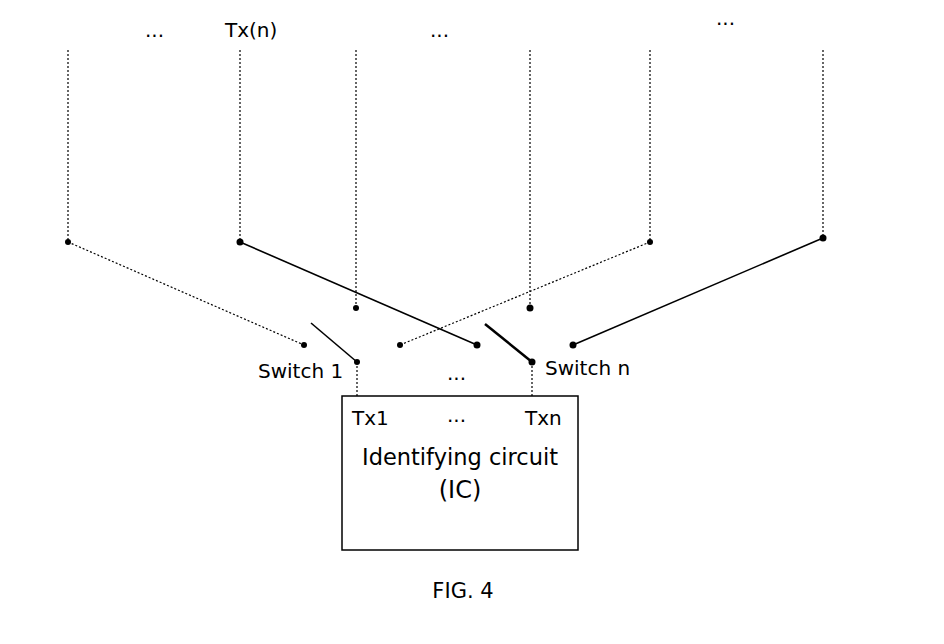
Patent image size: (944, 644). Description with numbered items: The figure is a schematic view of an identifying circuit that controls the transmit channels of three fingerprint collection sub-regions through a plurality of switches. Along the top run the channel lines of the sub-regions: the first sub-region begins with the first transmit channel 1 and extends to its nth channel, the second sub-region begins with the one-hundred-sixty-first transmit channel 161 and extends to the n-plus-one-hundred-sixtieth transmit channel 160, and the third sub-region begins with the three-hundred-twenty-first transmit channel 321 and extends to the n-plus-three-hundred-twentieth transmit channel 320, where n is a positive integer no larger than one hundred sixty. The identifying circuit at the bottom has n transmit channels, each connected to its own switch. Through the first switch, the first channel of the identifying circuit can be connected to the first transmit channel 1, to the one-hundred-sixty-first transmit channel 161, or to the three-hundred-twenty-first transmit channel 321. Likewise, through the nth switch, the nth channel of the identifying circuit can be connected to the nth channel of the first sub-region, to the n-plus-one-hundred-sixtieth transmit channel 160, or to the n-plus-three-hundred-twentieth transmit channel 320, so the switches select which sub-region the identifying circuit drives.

The Tx1 channel 1 is at (179, 183).
The Tx161 channel 161 is at (363, 164).
The Tx(n+160) channel 160 is at (537, 165).
The Tx321 channel 321 is at (538, 183).
The Tx(n+320) channel 320 is at (723, 184).